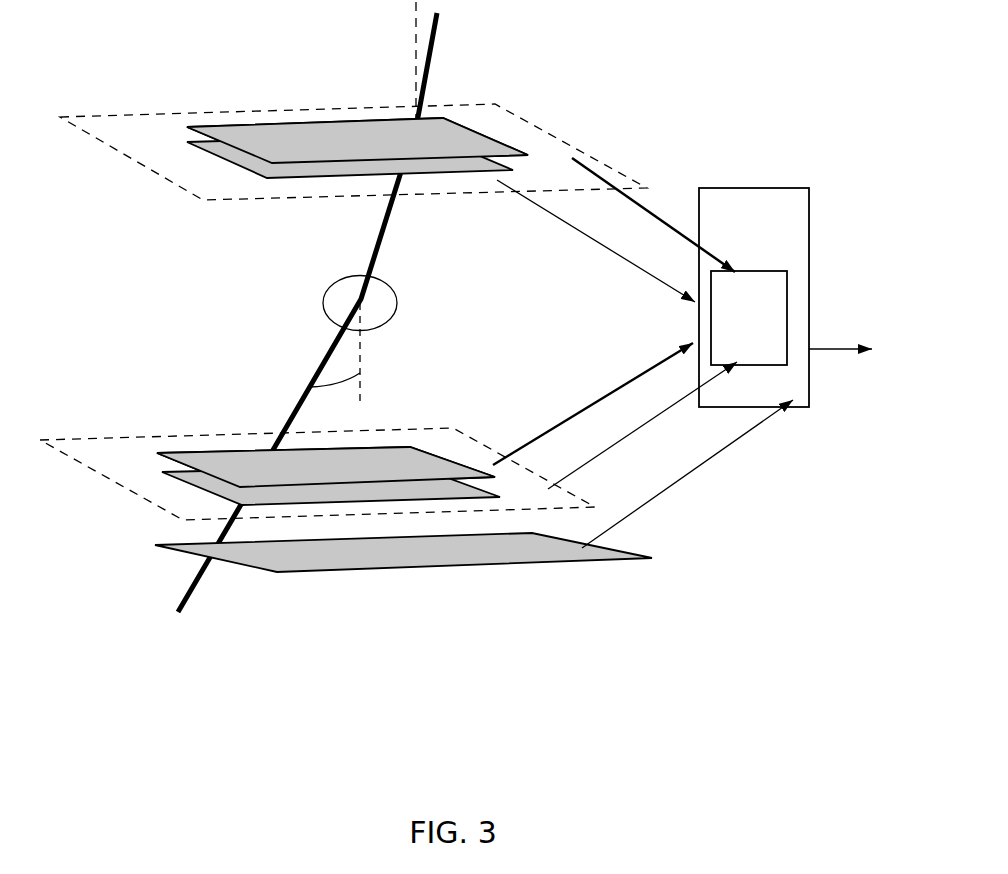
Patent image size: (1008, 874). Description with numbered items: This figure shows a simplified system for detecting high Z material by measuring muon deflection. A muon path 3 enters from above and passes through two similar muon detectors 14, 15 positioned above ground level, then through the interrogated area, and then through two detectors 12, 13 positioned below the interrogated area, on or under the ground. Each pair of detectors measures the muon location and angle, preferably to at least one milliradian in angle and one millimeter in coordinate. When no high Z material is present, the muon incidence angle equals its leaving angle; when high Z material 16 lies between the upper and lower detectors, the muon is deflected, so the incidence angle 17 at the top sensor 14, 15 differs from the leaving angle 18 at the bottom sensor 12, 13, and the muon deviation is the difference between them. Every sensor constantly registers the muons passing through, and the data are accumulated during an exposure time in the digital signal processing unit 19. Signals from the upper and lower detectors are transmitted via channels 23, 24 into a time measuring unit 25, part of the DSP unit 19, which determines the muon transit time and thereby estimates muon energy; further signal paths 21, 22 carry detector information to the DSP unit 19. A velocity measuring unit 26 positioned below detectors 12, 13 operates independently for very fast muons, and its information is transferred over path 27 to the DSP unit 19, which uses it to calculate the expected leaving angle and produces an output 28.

The light beam 3 is at (324, 310).
The incidence angle 17 is at (396, 60).
The muon detector 14 is at (353, 150).
The muon detector 15 is at (357, 157).
The high Z material 16 is at (386, 303).
The leaving angle 18 is at (335, 367).
The detector 12 is at (317, 461).
The detector 13 is at (328, 482).
The velocity measuring unit 26 is at (403, 569).
The digital signal processing unit 19 is at (754, 297).
The time measuring unit 25 is at (749, 318).
The output signal 28 is at (840, 328).
The channel 24 is at (653, 215).
The reflected beam from second upper plate 21 is at (596, 241).
The reflected beam from first lower plate 22 is at (593, 404).
The channel 23 is at (642, 425).
The reflected beam from reference plate 27 is at (687, 474).